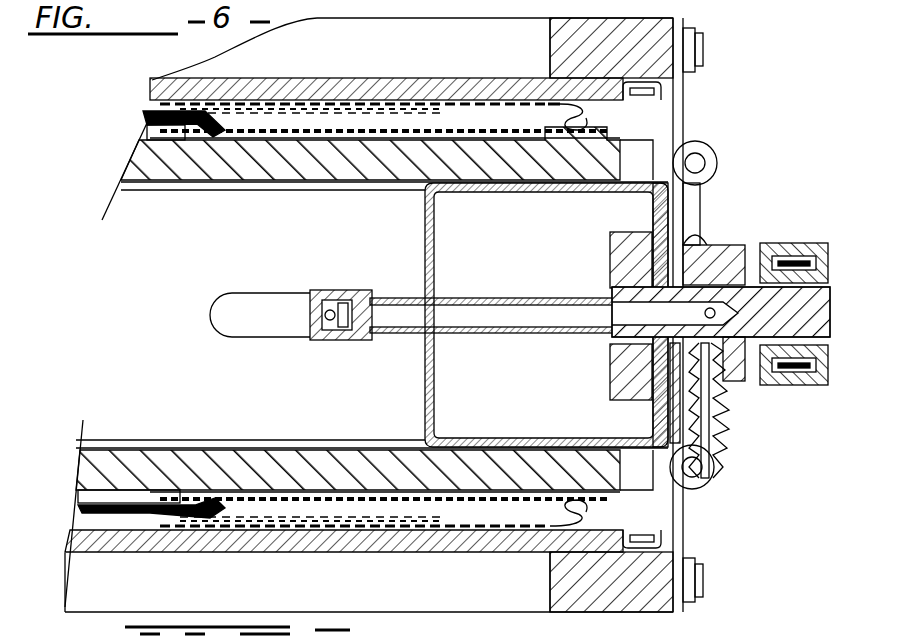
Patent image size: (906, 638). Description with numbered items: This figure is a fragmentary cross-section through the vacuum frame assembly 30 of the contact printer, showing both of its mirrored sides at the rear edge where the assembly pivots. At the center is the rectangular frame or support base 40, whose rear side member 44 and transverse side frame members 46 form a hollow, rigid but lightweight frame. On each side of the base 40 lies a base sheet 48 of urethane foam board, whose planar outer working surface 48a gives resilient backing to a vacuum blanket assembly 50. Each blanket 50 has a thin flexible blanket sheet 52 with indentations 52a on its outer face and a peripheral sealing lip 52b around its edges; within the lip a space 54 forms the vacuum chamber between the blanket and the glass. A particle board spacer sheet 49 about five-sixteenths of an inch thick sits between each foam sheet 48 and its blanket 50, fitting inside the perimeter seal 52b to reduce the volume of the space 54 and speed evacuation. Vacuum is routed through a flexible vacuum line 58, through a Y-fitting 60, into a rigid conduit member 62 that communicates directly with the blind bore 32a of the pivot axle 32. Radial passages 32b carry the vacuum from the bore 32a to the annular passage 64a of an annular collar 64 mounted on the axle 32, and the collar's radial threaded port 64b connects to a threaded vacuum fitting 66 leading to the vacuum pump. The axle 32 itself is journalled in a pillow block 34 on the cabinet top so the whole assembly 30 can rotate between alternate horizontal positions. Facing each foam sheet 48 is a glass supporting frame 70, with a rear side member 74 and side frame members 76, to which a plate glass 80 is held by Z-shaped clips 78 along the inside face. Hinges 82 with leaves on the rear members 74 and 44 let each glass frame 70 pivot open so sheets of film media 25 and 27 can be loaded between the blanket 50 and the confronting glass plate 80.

The sheet of film media 25 is at (445, 100).
The sheet of film media 27 is at (330, 107).
The vacuum frame assembly 30 is at (708, 205).
The pivot axle 32 is at (805, 314).
The blind bore 32a is at (640, 348).
The radial passages 32b is at (640, 297).
The pillow block 34 is at (783, 245).
The frame or support base 40 is at (640, 177).
The rear side member 44 is at (425, 373).
The side frame member 46 is at (100, 440).
The base sheet 48 is at (140, 157).
The outer working surface 48a is at (600, 141).
The particle board spacer sheet 49 is at (164, 140).
The vacuum blanket assembly 50 is at (135, 117).
The blanket sheet 52 is at (233, 140).
The indentations 52a is at (485, 122).
The peripheral sealing lip 52b is at (573, 108).
The space or vacuum chamber 54 is at (518, 115).
The flexible vacuum line 58 is at (197, 311).
The Y-fitting 60 is at (333, 290).
The rigid conduit member 62 is at (453, 335).
The annular collar 64 is at (742, 367).
The annular passage 64a is at (702, 292).
The radial threaded port 64b is at (663, 395).
The threaded vacuum fitting 66 is at (720, 431).
The glass supporting frame 70 is at (442, 22).
The rear side member 74 is at (625, 40).
The side frame member 76 is at (358, 56).
The Z-shaped clip 78 is at (607, 108).
The plate glass 80 is at (381, 99).
The hinge 82 is at (708, 164).